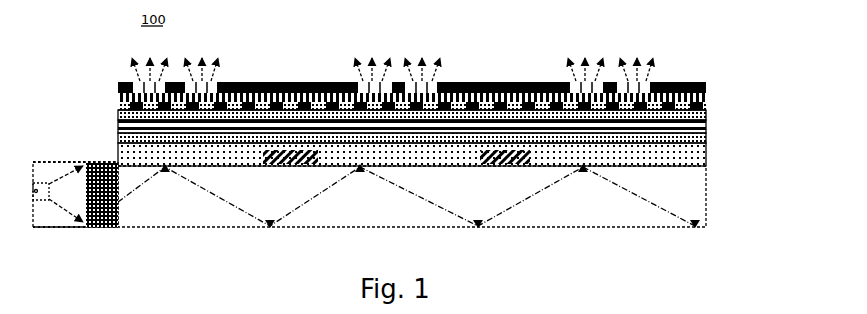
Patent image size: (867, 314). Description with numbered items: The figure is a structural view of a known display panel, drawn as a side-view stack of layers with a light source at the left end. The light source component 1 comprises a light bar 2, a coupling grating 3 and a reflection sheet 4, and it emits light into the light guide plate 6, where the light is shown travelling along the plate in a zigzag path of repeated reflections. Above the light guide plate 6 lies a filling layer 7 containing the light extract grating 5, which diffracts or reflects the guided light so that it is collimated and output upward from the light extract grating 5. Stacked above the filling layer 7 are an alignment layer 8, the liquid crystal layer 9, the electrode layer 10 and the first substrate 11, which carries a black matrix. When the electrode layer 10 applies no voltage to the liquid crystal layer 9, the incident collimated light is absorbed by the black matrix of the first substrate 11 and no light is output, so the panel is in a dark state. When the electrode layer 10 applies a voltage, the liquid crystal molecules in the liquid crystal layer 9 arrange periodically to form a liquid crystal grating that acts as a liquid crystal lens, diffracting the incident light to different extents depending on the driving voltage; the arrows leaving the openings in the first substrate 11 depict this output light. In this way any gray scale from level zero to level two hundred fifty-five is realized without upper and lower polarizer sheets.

The light source component 1 is at (65, 194).
The light bar 2 is at (55, 207).
The coupling grating 3 is at (108, 227).
The reflection sheet 4 is at (58, 162).
The light extract grating 5 is at (278, 158).
The light guide plate 6 is at (695, 200).
The filling layer 7 is at (707, 155).
The alignment layer 8 is at (707, 115).
The liquid crystal layer 9 is at (707, 125).
The electrode layer 10 is at (707, 100).
The first substrate 11 is at (707, 86).